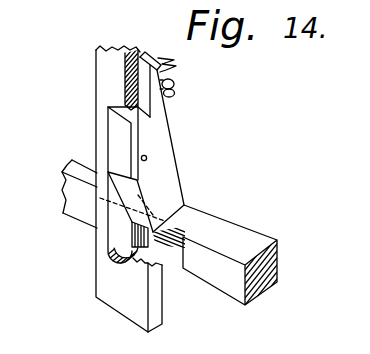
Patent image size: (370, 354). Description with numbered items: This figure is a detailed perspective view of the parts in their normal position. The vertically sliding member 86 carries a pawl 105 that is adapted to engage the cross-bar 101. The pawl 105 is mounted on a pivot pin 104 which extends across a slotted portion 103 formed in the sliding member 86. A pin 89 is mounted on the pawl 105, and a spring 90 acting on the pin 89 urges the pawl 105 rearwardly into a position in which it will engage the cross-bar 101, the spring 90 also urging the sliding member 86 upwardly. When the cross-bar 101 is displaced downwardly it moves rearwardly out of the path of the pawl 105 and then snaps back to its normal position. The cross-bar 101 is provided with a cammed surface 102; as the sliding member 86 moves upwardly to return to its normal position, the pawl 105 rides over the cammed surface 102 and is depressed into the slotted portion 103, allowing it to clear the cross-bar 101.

The vertically sliding member 86 is at (98, 277).
The pin 89 is at (177, 91).
The spring 90 is at (172, 68).
The cross-bar 101 is at (232, 228).
The cammed surface 102 is at (168, 250).
The slotted portion 103 is at (113, 243).
The pivot pin 104 is at (147, 157).
The pawl 105 is at (168, 155).